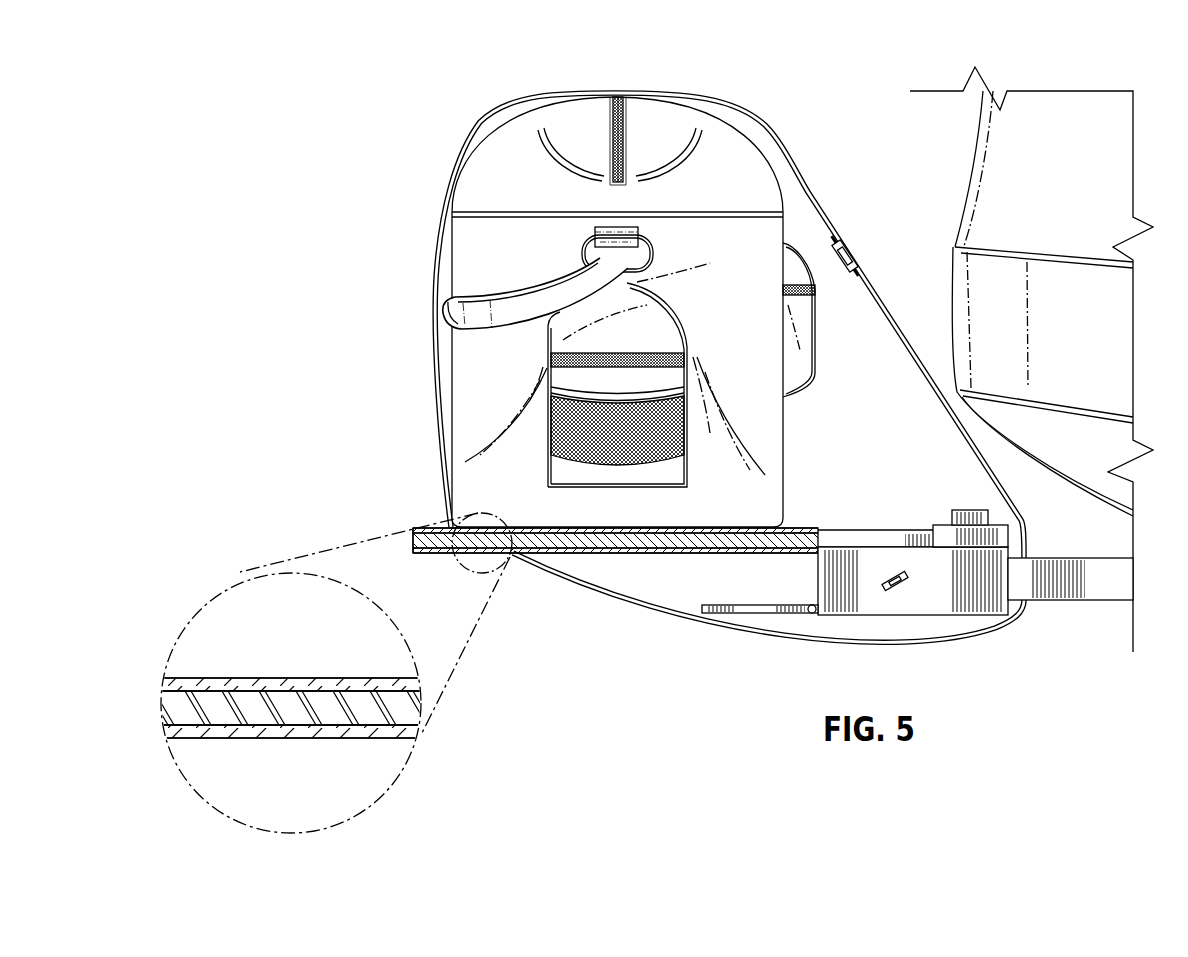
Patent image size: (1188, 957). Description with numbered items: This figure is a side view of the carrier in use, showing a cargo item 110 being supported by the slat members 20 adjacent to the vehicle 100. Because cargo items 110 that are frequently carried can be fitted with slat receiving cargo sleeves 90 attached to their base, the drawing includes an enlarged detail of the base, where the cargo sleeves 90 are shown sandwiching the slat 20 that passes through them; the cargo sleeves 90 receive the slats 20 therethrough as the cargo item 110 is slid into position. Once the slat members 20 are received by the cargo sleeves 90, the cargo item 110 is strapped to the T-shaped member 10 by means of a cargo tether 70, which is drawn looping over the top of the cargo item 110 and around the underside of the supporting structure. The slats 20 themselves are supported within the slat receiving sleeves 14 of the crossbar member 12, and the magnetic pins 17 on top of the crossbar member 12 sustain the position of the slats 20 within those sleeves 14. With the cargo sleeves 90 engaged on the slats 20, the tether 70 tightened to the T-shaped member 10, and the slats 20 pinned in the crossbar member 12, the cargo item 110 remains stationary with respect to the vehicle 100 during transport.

The T-shaped member 10 is at (988, 653).
The crossbar member 12 is at (1010, 588).
The slat receiving sleeves 14 is at (933, 535).
The magnetic pins 17 is at (968, 510).
The slat member 20 is at (840, 540).
The cargo tether 70 is at (900, 345).
The slat receiving cargo sleeves 90 is at (415, 527).
The vehicle 100 is at (950, 257).
The cargo item 110 is at (487, 170).